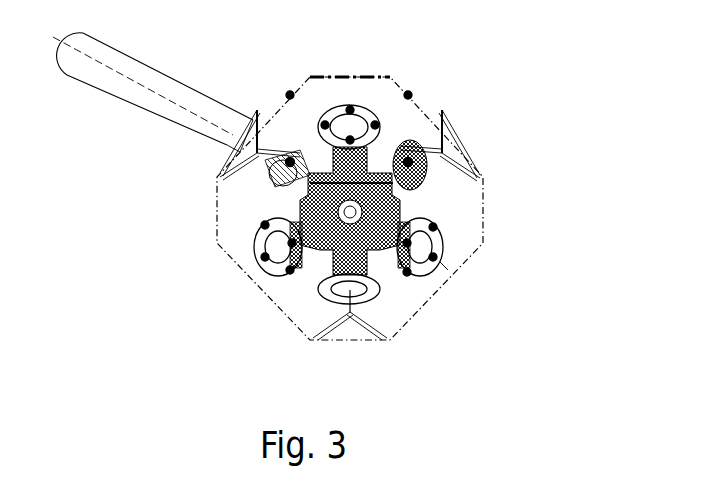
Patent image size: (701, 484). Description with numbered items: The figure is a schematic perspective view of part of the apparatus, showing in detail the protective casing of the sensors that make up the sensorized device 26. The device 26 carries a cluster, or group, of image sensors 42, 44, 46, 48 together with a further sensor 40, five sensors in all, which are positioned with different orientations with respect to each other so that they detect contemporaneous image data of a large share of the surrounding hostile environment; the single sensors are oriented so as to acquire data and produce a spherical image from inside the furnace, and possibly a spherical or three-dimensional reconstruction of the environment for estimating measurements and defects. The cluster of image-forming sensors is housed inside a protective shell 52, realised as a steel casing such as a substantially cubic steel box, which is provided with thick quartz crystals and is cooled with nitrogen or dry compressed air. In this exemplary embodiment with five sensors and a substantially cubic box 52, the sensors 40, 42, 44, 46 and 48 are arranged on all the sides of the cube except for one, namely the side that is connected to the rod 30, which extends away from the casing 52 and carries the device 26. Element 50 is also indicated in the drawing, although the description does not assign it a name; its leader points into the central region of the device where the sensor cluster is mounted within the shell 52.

The sensorized device 26 is at (352, 207).
The rod 30 is at (187, 85).
The sensor 40 is at (408, 158).
The image sensor 42 is at (360, 160).
The image sensor 44 is at (388, 232).
The image sensor 46 is at (358, 270).
The image sensor 48 is at (307, 225).
The central hub 50 is at (343, 242).
The protective shell 52 is at (447, 285).